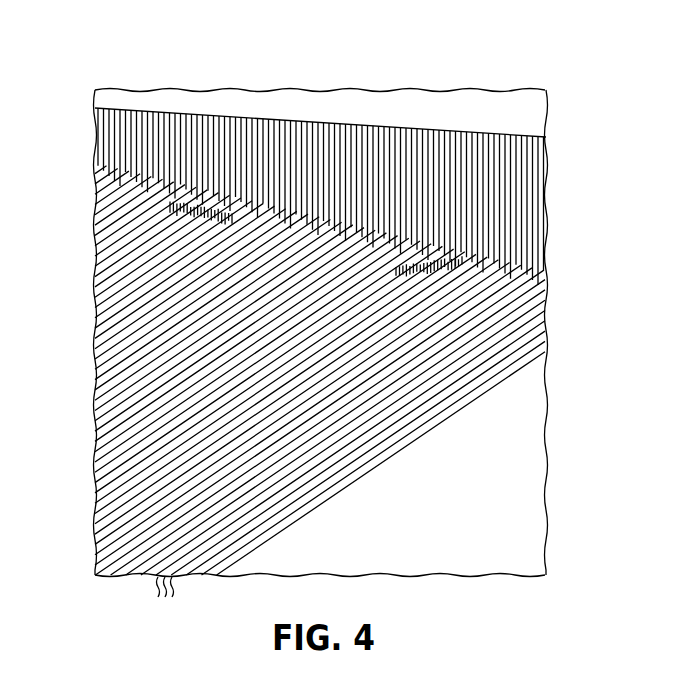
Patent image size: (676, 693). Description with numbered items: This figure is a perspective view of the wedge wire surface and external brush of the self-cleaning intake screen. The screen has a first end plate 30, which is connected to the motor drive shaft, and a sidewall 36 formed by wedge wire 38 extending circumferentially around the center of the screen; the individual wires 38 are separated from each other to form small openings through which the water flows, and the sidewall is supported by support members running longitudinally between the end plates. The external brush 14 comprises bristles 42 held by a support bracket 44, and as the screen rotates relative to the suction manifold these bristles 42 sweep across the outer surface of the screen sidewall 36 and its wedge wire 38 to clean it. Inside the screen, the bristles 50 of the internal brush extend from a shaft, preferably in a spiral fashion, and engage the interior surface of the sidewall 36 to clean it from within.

The external brush 14 is at (292, 110).
The support bracket 44 is at (478, 120).
The bristles 42 is at (546, 181).
The sidewall 36 is at (94, 515).
The first end plate 30 is at (471, 500).
The bristles 50 is at (172, 218).
The wedge wire 38 is at (166, 602).